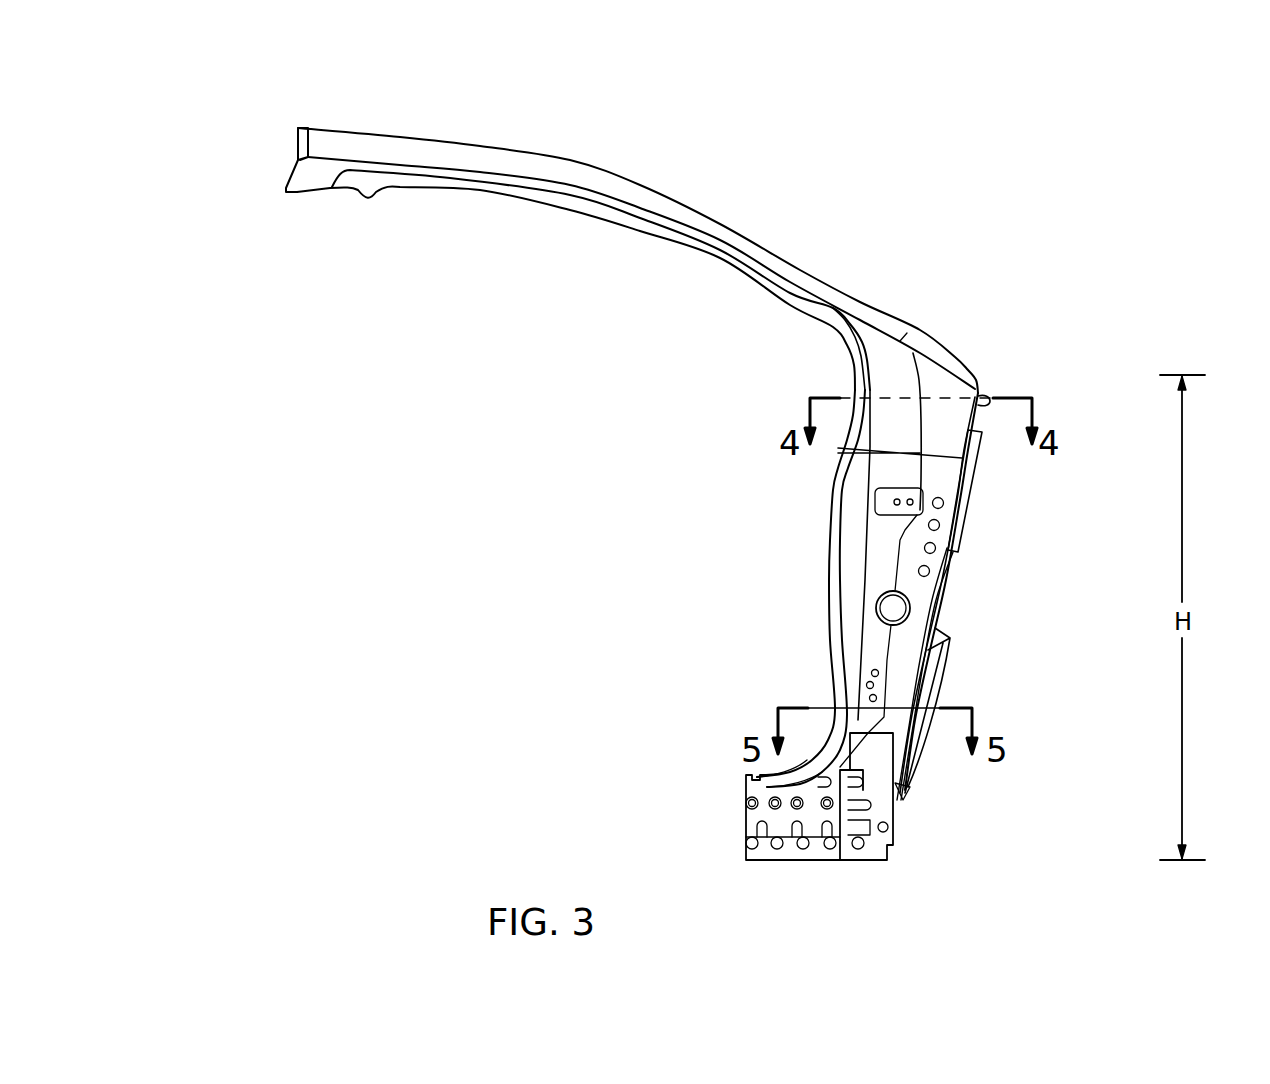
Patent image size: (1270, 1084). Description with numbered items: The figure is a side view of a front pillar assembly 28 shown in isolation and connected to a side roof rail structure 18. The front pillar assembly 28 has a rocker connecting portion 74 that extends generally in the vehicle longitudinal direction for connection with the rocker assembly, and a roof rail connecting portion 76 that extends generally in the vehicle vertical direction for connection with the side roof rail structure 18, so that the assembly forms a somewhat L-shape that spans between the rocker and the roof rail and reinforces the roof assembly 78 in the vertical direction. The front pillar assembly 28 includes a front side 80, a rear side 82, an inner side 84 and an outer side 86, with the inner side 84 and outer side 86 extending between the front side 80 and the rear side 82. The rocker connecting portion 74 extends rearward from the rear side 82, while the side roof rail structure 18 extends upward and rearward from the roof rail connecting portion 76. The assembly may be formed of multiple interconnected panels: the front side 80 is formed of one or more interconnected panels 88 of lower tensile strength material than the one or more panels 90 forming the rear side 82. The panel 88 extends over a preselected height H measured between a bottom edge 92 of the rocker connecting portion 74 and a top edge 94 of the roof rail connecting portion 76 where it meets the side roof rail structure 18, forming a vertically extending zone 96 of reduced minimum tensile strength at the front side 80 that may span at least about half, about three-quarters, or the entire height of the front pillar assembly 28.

The side roof rail structure 18 is at (706, 184).
The front pillar assembly 28 is at (932, 264).
The rocker connecting portion 74 is at (733, 810).
The roof rail connecting portion 76 is at (982, 552).
The roof assembly 78 is at (272, 142).
The front side 80 is at (1062, 460).
The rear side 82 is at (686, 515).
The inner side 84 is at (982, 513).
The outer side 86 is at (914, 612).
The interconnected panels 88 is at (926, 589).
The panels 90 is at (872, 571).
The bottom edge 92 is at (830, 862).
The top edge 94 is at (958, 373).
The zone of reduced minimum tensile strength 96 is at (962, 674).